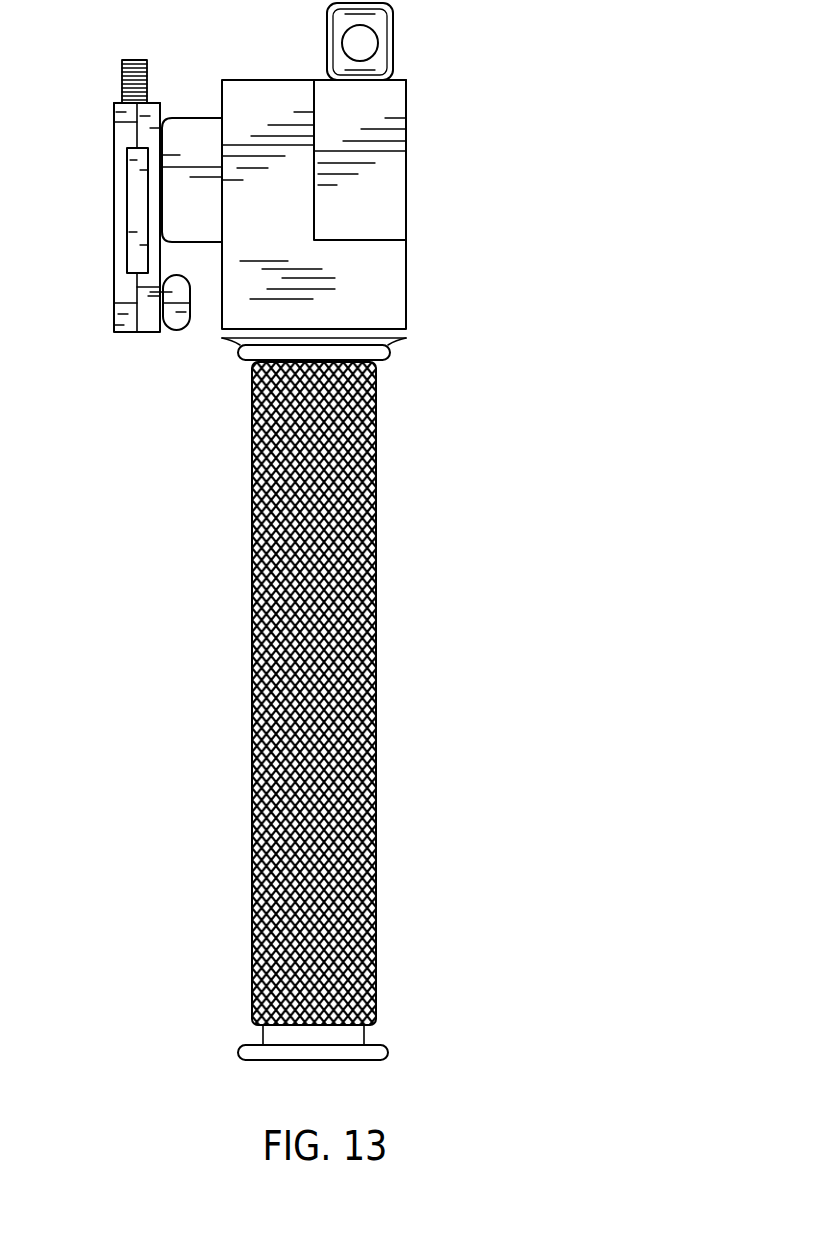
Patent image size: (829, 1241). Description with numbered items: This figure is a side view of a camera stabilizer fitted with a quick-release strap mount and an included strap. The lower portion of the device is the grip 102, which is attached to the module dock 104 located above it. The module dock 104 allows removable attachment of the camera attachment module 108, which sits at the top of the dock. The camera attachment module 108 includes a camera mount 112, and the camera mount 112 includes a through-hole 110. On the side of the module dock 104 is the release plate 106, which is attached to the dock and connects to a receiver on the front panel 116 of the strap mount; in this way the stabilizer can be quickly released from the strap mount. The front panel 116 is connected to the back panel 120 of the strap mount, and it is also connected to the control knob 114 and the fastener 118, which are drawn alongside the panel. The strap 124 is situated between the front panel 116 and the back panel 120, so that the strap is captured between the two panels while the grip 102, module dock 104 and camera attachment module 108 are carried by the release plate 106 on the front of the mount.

The grip 102 is at (376, 558).
The module dock 104 is at (406, 277).
The release plate 106 is at (190, 118).
The camera attachment module 108 is at (406, 167).
The through-hole 110 is at (343, 43).
The camera mount 112 is at (394, 40).
The control knob 114 is at (181, 330).
The front panel of the strap mount 116 is at (147, 332).
The fastener 118 is at (122, 84).
The back panel of the strap mount 120 is at (114, 122).
The strap 124 is at (128, 182).